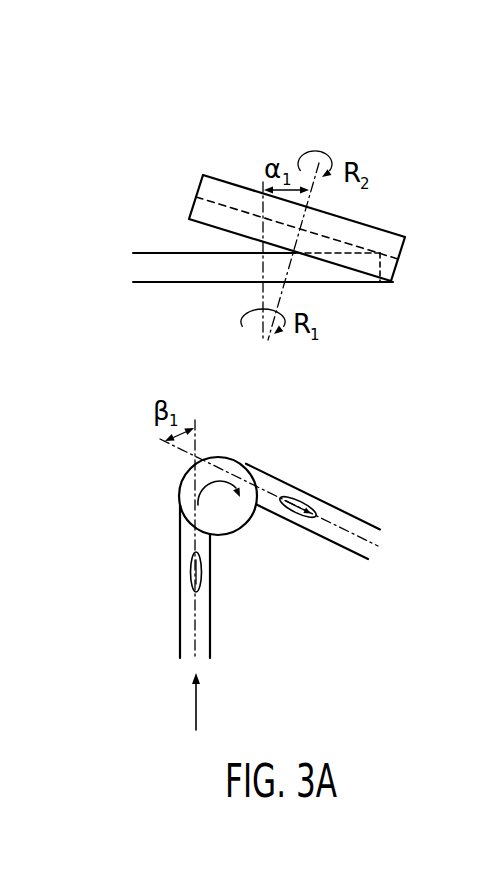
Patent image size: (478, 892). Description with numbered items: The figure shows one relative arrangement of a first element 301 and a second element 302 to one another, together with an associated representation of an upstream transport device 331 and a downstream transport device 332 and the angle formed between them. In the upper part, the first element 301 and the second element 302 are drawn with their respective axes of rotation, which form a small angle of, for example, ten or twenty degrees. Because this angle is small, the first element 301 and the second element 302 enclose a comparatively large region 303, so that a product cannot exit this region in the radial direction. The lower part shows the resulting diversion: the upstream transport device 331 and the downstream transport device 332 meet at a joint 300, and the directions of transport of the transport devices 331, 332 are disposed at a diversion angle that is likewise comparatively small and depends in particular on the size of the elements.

The ball joint / rotating connector 300 is at (246, 524).
The first element 301 is at (184, 293).
The second element 302 is at (398, 235).
The region 303 is at (380, 284).
The upstream transport device 331 is at (180, 646).
The downstream transport device 332 is at (358, 519).